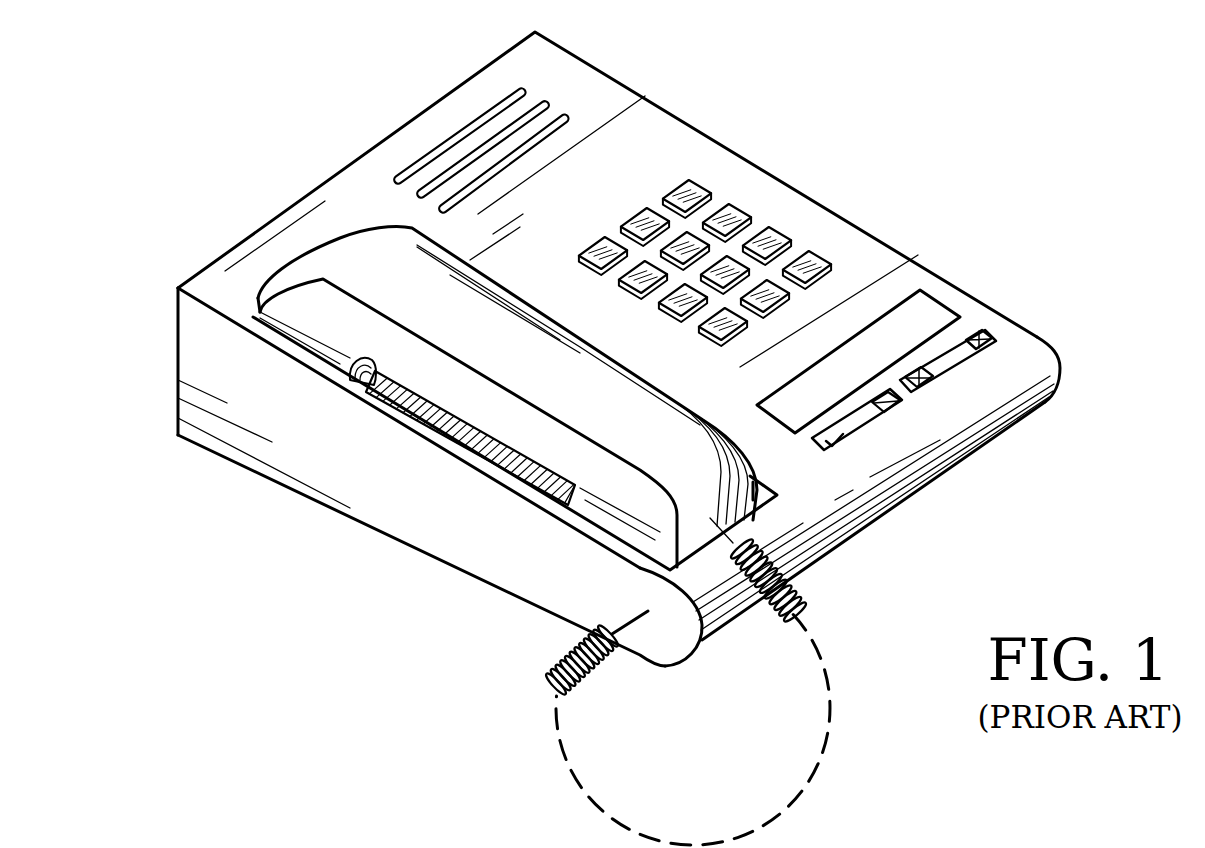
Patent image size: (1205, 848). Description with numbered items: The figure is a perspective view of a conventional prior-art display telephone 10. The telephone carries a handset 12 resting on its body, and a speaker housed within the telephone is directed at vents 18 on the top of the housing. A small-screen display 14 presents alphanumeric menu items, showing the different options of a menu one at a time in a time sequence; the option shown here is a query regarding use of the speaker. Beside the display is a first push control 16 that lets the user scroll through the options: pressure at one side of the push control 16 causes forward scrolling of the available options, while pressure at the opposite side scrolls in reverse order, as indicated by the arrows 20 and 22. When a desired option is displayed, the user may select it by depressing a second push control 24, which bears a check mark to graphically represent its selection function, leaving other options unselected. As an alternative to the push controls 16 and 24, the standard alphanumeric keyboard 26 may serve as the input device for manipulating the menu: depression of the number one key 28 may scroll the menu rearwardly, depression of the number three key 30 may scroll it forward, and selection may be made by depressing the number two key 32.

The display telephone 10 is at (958, 107).
The handset 12 is at (370, 263).
The small-screen display 14 is at (933, 308).
The first push control 16 is at (1017, 370).
The vents 18 is at (467, 133).
The arrow 20 is at (973, 333).
The arrow 22 is at (940, 377).
The second push control 24 is at (875, 420).
The alphanumeric keyboard 26 is at (719, 239).
The number "1" key 28 is at (603, 247).
The number "3" key 30 is at (685, 190).
The number "2" key 32 is at (643, 218).